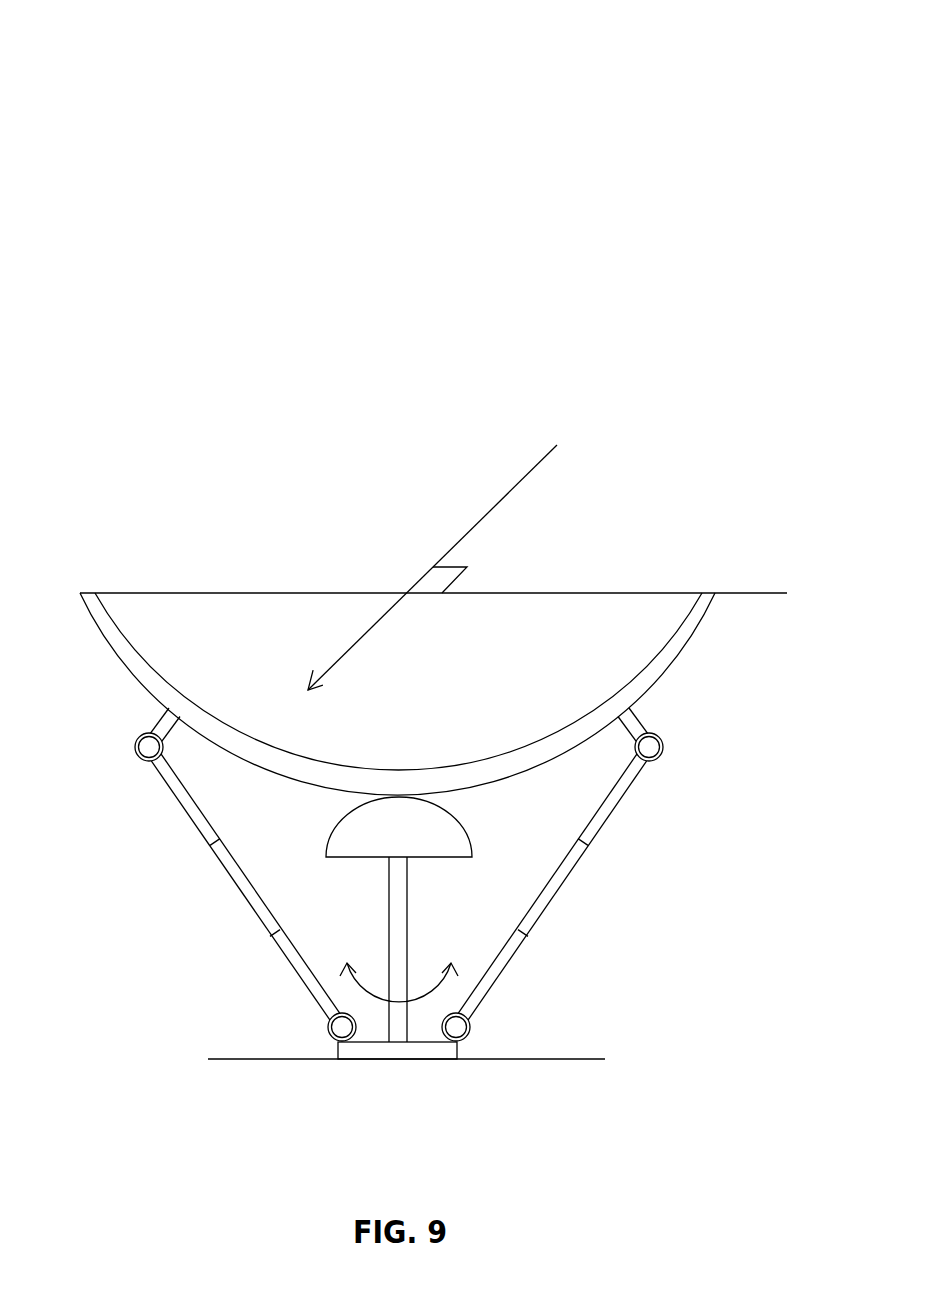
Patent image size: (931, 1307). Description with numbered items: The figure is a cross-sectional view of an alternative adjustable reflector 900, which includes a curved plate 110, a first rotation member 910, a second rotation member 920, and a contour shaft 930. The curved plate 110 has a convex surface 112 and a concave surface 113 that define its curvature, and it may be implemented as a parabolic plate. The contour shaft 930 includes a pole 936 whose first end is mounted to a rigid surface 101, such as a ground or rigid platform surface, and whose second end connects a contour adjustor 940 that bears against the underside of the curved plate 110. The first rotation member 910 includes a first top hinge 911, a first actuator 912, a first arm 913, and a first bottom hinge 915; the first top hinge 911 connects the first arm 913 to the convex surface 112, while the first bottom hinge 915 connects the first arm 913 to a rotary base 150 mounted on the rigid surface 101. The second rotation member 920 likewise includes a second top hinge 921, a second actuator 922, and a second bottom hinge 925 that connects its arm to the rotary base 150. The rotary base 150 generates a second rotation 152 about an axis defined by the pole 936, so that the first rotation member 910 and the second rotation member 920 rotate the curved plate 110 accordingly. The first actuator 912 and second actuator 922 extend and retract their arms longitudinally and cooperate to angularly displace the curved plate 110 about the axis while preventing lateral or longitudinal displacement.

The alternative adjustable reflector 900 is at (749, 84).
The rigid surface 101 is at (580, 1059).
The curved plate 110 is at (412, 694).
The convex surface 112 is at (125, 667).
The concave surface 113 is at (205, 712).
The rotary base 150 is at (348, 1059).
The second rotation 152 is at (433, 997).
The first rotation member 910 is at (209, 874).
The first top hinge 911 is at (136, 742).
The first actuator 912 is at (247, 907).
The first arm 913 is at (189, 813).
The first bottom hinge 915 is at (328, 1028).
The second rotation member 920 is at (589, 874).
The second top hinge 921 is at (663, 741).
The second actuator 922 is at (553, 907).
The second bottom hinge 925 is at (470, 1028).
The contour shaft 930 is at (419, 919).
The pole 936 is at (398, 908).
The contour adjustor 940 is at (458, 817).